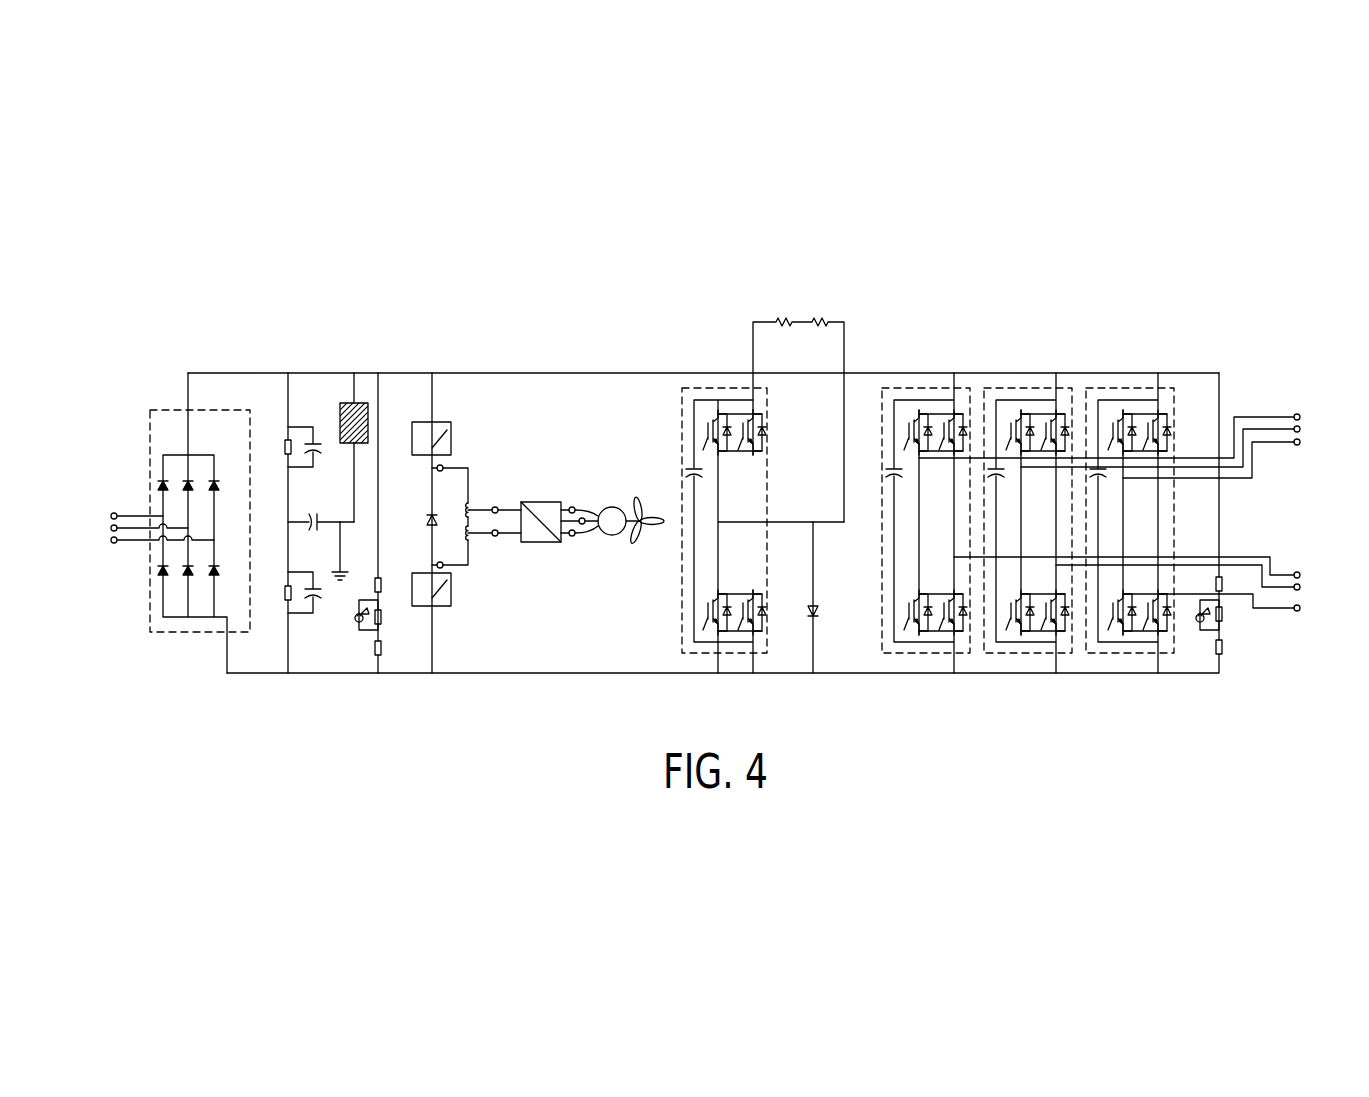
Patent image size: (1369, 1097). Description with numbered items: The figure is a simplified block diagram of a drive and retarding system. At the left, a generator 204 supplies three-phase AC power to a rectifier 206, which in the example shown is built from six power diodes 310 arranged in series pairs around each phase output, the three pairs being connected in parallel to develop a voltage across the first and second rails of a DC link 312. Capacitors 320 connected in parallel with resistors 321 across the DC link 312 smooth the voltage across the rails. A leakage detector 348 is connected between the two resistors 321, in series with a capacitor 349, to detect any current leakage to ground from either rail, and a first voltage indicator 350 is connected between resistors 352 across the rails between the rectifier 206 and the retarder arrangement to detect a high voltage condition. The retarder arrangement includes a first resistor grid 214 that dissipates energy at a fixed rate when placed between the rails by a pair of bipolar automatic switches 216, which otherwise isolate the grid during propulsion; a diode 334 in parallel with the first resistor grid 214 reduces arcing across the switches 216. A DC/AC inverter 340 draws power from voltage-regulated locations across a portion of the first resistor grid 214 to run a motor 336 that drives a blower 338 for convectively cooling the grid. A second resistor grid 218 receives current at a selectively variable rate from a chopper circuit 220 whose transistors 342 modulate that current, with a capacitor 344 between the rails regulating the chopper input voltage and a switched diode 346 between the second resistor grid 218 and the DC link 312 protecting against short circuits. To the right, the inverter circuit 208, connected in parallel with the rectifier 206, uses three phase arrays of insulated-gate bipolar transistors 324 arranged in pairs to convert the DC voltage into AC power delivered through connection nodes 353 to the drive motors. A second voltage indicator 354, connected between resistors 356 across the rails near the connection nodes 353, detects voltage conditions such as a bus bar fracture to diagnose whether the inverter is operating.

The generator 204 is at (107, 532).
The rectifier 206 is at (148, 421).
The inverter circuit 208 is at (1037, 498).
The first resistor grid 214 is at (472, 507).
The bipolar automatic switches 216 is at (452, 440).
The second resistor grid 218 is at (796, 320).
The chopper circuit 220 is at (680, 410).
The power diodes 310 is at (162, 486).
The DC link 312 is at (445, 373).
The capacitors 320 is at (316, 446).
The resistors 321 is at (285, 440).
The insulated-gate bipolar transistors 324 is at (958, 410).
The diode 334 is at (431, 521).
The motor 336 is at (615, 507).
The blower 338 is at (641, 542).
The DC/AC inverter 340 is at (553, 502).
The transistors 342 is at (718, 404).
The capacitor 344 is at (690, 478).
The switched diode 346 is at (816, 614).
The leakage detector 348 is at (354, 403).
The capacitor 349 is at (320, 519).
The first voltage indicator 350 is at (364, 621).
The resistors 352 is at (381, 587).
The connection nodes 353 is at (1300, 417).
The second voltage indicator 354 is at (1205, 621).
The resistors 356 is at (1222, 652).